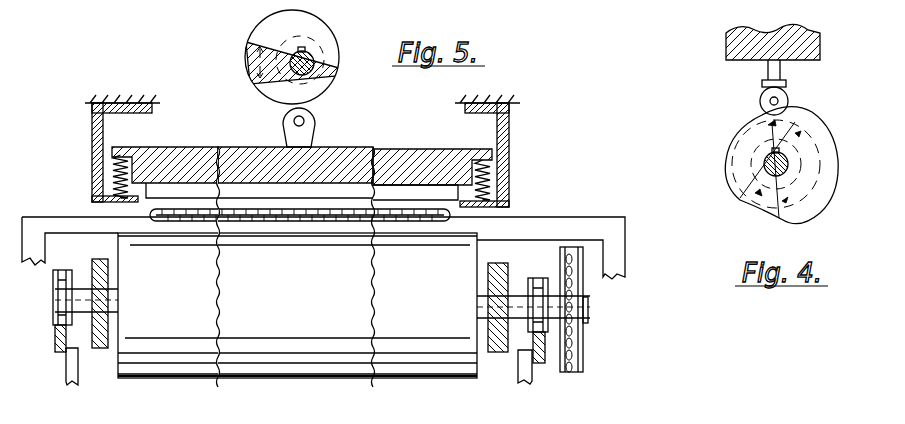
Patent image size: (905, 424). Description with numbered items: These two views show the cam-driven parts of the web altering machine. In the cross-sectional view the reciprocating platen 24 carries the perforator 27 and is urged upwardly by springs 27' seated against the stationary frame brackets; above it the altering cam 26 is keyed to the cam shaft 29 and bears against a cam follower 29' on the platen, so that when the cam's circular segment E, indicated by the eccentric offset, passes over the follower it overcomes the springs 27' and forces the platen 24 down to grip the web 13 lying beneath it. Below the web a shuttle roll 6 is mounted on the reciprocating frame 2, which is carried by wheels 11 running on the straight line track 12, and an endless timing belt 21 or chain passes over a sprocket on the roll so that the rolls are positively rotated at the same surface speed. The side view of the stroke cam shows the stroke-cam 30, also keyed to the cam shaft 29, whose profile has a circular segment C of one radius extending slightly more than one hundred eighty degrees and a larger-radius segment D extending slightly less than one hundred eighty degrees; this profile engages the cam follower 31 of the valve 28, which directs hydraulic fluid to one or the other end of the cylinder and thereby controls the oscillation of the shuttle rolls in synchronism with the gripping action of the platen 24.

In FIG. 5, the reciprocating frame 2 is at (102, 345).
In FIG. 5, the shuttle roll 6 is at (284, 380).
In FIG. 5, the wheels 11 is at (53, 305).
In FIG. 5, the straight line track 12 is at (60, 334).
In FIG. 5, the web 13 is at (325, 222).
In FIG. 5, the endless timing belt 21 is at (575, 367).
In FIG. 5, the reciprocating platen 24 is at (208, 150).
In FIG. 5, the altering cam 26 is at (338, 60).
In FIG. 5, the perforator 27 is at (302, 151).
In FIG. 5, the springs 27' is at (296, 174).
In FIG. 4, the valve 28 is at (728, 49).
In FIG. 5, the cam shaft 29 is at (332, 64).
In FIG. 4, the cam shaft 29 is at (748, 188).
In FIG. 5, the cam follower 29' is at (325, 127).
In FIG. 4, the stroke-cam 30 is at (742, 135).
In FIG. 4, the cam follower 31 is at (790, 104).